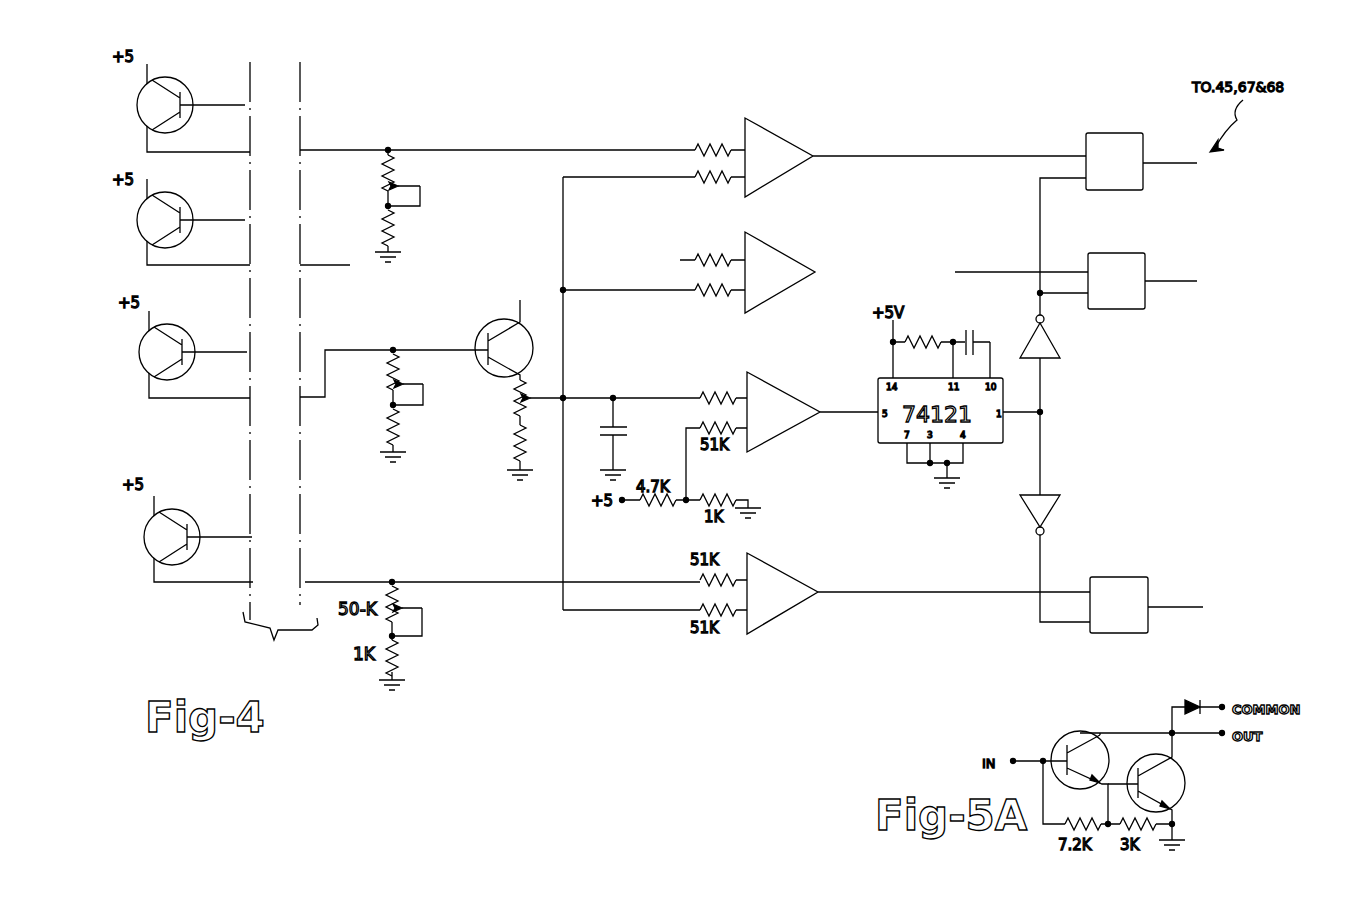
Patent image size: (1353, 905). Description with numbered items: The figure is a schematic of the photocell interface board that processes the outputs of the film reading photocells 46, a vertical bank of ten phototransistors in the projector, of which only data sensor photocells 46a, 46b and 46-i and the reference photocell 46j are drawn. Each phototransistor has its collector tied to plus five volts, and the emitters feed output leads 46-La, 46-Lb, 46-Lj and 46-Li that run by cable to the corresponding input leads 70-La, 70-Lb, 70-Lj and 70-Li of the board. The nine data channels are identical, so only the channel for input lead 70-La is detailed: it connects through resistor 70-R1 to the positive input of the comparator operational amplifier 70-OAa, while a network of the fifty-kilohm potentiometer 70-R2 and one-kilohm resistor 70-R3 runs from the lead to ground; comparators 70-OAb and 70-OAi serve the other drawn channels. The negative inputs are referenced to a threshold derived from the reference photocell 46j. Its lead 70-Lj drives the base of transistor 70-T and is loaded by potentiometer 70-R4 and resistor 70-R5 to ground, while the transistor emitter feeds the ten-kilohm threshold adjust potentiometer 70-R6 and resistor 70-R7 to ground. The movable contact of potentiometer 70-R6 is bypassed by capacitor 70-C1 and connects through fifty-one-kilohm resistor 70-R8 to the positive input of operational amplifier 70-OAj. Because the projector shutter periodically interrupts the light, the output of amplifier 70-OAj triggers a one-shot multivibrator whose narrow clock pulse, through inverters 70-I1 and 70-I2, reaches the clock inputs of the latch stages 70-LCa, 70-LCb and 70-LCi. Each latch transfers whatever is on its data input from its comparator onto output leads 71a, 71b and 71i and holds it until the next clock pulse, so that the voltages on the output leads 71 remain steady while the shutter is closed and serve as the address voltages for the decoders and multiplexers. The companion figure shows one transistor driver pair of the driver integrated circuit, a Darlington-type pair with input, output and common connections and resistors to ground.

The film reading photocells 46 is at (182, 27).
The data sensor photocell 46a is at (190, 96).
The data sensor photocell 46b is at (186, 210).
The reference photocell 46j is at (190, 346).
The data sensor photocell 46-i is at (198, 524).
The output lead 46-La is at (228, 152).
The output lead 46-Lb is at (232, 256).
The output lead 46-Lj is at (246, 400).
The output lead 46-Li is at (233, 584).
The input lead 70-La is at (343, 148).
The input lead 70-Lb is at (336, 264).
The reference circuit input lead 70-Lj is at (341, 350).
The input lead 70-Li is at (353, 578).
The resistor 70-R1 is at (701, 130).
The 50K potentiometer 70-R2 is at (392, 179).
The 1K resistor 70-R3 is at (403, 236).
The 50K potentiometer 70-R4 is at (397, 381).
The 1K potentiometer 70-R5 is at (405, 435).
The threshold adjust potentiometer 70-R6 is at (512, 399).
The 1K resistor 70-R7 is at (508, 452).
The 51K resistor 70-R8 is at (700, 375).
The transistor 70-T is at (495, 329).
The capacitor 70-C1 is at (609, 439).
The comparator operational amplifier 70-OAa is at (765, 124).
The comparator operational amplifier 70-OAb is at (775, 250).
The comparator operational amplifier 70-OAj is at (812, 406).
The comparator operational amplifier 70-OAi is at (918, 595).
The inverter 70-I1 is at (1065, 268).
The inverter 70-I2 is at (1066, 558).
The latch integrated circuit stage 70-LCa is at (1110, 146).
The latch integrated circuit stage 70-LCb is at (1050, 266).
The latch integrated circuit stage 70-LCi is at (1117, 590).
The output lead 71a is at (1180, 162).
The output lead 71b is at (1190, 272).
The output lead 71i is at (1181, 609).
The output leads 71 is at (1210, 110).